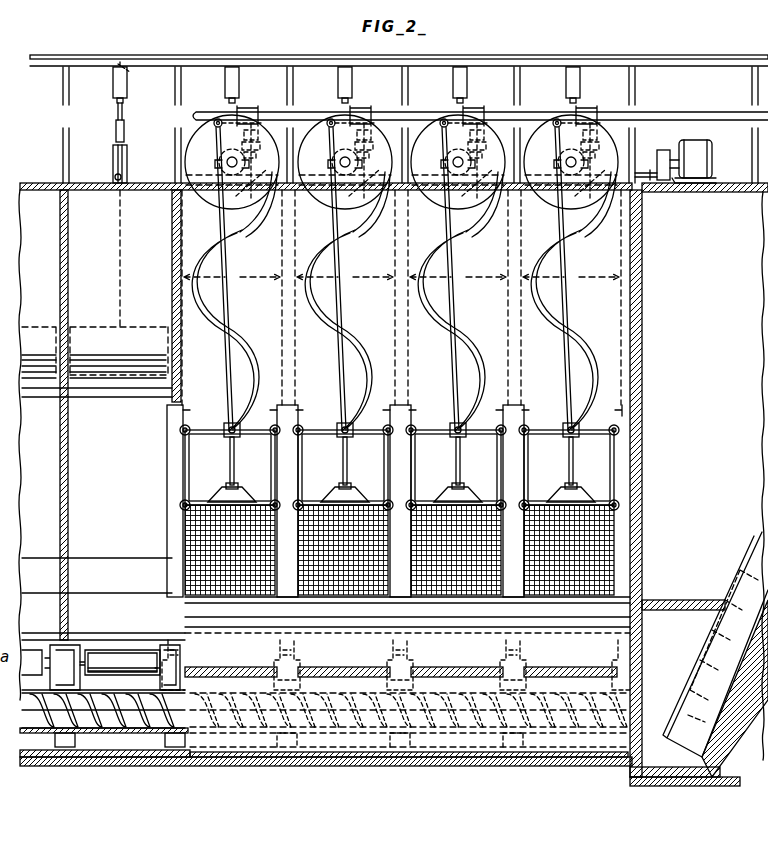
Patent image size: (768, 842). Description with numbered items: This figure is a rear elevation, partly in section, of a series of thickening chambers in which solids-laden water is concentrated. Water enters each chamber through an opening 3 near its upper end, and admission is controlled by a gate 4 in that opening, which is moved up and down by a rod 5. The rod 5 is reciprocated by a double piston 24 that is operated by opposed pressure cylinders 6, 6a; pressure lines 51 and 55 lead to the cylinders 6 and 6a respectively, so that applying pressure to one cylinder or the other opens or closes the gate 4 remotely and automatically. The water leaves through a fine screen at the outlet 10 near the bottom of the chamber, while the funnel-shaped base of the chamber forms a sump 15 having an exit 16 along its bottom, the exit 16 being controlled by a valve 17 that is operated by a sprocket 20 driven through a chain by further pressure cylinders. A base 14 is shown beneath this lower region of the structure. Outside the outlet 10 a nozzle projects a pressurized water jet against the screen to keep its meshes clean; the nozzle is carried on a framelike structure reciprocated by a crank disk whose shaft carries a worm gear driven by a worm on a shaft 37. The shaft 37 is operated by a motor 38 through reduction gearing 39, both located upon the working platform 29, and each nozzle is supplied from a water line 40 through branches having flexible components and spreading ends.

The opening 3 is at (39, 403).
The gate 4 is at (43, 326).
The rod 5 is at (110, 251).
The pressure cylinder 6 is at (112, 160).
The pressure cylinder 6a is at (113, 88).
The outlet 10 is at (235, 601).
The base 14 is at (32, 732).
The sump 15 is at (20, 712).
The exit 16 is at (32, 632).
The valve 17 is at (131, 645).
The sprocket 20 is at (180, 652).
The double piston 24 is at (110, 133).
The working platform 29 is at (36, 183).
The shaft 37 is at (650, 173).
The motor 38 is at (697, 178).
The reduction gearing 39 is at (664, 180).
The water line 40 is at (683, 110).
The pressure line 51 is at (122, 177).
The pressure line 55 is at (124, 70).